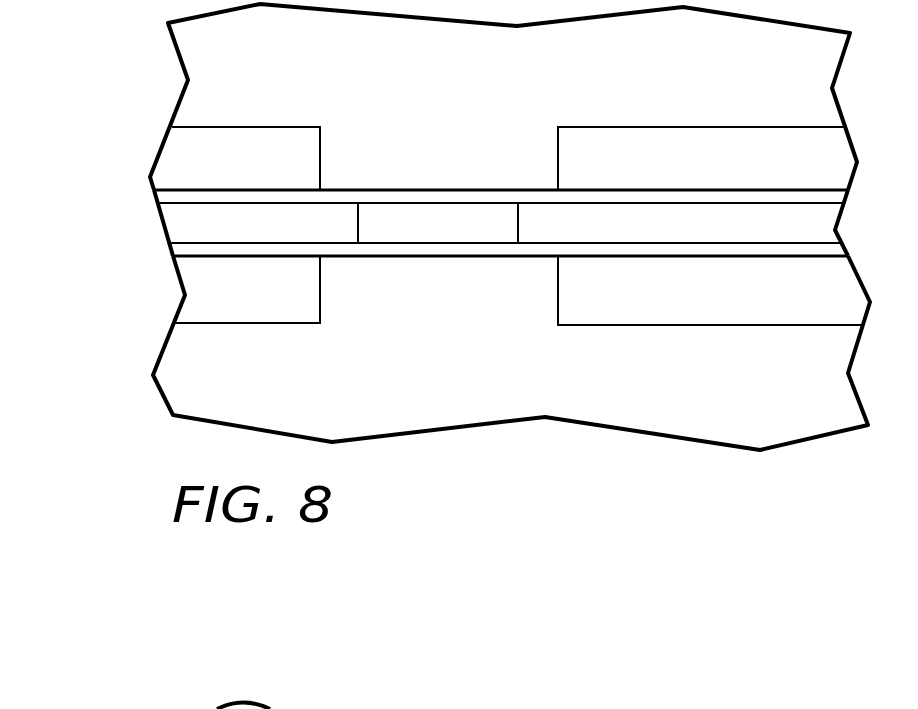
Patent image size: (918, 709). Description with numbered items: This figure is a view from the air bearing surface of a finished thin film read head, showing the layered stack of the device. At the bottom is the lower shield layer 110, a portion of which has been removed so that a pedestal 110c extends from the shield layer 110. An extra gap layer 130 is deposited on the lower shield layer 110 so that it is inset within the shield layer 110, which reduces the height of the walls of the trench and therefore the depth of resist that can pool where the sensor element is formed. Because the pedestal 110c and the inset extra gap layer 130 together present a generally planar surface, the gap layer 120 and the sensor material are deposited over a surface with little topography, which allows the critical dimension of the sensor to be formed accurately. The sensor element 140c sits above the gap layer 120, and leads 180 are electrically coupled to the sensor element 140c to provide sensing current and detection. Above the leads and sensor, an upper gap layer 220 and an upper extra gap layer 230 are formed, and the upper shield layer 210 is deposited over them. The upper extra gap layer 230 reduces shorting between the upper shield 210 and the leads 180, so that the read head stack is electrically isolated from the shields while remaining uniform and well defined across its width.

The upper shield layer 210 is at (202, 85).
The upper extra gap layer 230 is at (202, 150).
The upper gap layer 220 is at (180, 197).
The leads 180 is at (202, 213).
The sensor element 140c is at (373, 214).
The gap layer 120 is at (180, 249).
The extra gap layer 130 is at (202, 288).
The lower shield layer 110 is at (202, 362).
The pedestal 110c is at (490, 293).